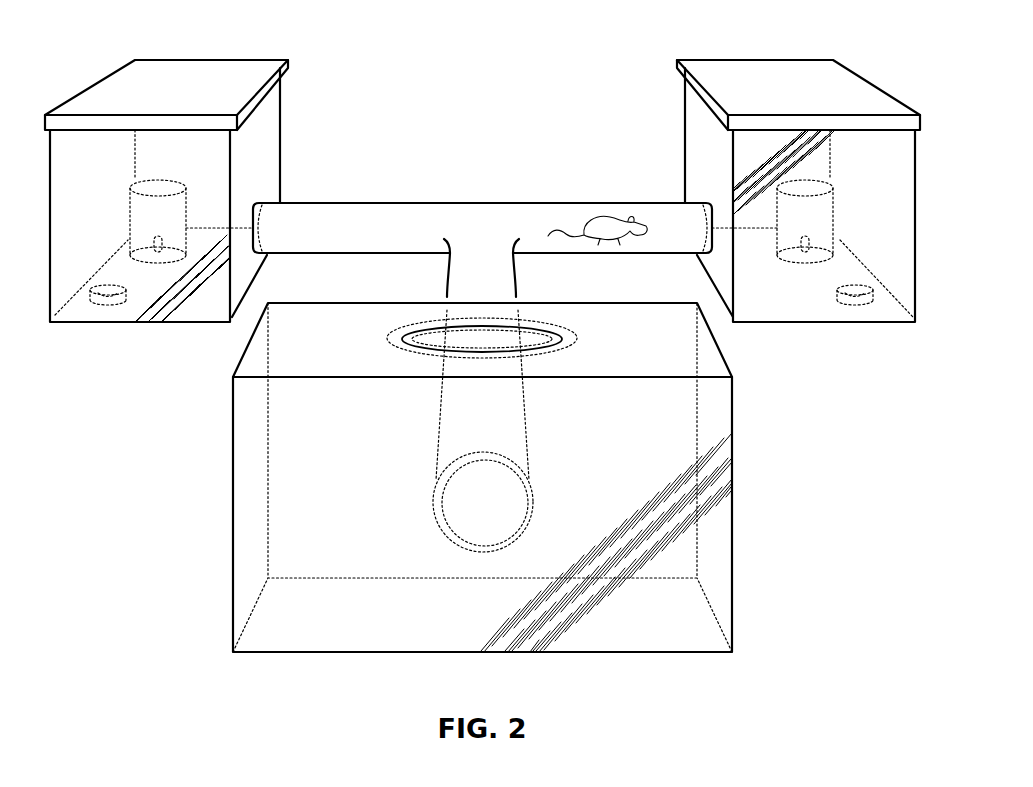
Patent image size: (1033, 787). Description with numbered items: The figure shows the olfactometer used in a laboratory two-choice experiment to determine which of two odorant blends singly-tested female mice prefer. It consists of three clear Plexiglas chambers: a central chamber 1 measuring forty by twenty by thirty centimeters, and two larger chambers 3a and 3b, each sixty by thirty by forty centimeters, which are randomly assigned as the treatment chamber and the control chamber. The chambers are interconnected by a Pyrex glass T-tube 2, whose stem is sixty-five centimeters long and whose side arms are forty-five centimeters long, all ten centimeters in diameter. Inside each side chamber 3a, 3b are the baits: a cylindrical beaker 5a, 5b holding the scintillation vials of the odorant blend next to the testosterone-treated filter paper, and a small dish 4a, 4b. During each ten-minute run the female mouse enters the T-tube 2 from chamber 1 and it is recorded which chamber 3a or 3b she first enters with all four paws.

The chamber 1 is at (252, 476).
The T-tube 2 is at (483, 215).
The treatment or control chamber 3a is at (72, 62).
The treatment or control chamber 3b is at (900, 62).
The first dish 4a is at (108, 312).
The second dish 4b is at (857, 312).
The first cylindrical container 5a is at (130, 222).
The second cylindrical container 5b is at (837, 222).